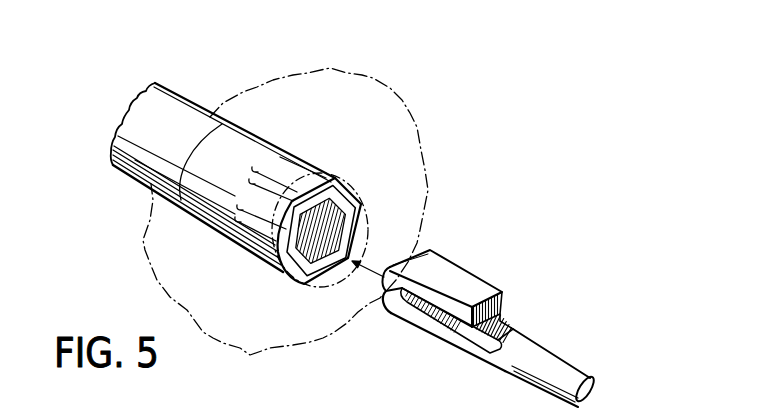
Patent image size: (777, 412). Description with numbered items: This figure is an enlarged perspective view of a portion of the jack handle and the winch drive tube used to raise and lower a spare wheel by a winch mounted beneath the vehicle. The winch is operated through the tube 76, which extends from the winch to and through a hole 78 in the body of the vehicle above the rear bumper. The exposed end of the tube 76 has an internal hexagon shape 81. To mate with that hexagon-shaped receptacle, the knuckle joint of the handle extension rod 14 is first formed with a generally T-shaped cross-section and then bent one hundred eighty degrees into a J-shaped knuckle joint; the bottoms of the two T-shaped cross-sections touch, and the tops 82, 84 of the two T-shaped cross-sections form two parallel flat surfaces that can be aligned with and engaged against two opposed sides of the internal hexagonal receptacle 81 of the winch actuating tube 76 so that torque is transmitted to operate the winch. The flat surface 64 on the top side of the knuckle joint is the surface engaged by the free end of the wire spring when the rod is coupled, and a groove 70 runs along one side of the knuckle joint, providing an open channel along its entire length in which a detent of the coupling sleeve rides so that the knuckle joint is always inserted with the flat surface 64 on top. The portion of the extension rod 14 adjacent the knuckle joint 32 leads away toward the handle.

The handle extension rod 14 is at (599, 369).
The plug shank 32 is at (477, 370).
The flat surface 64 is at (502, 301).
The groove 70 is at (383, 292).
The tube 76 is at (172, 157).
The hole 78 is at (360, 191).
The internal hexagon shape 81 is at (361, 222).
The top of T-shaped cross-section 82 is at (447, 272).
The top of T-shaped cross-section 84 is at (432, 343).